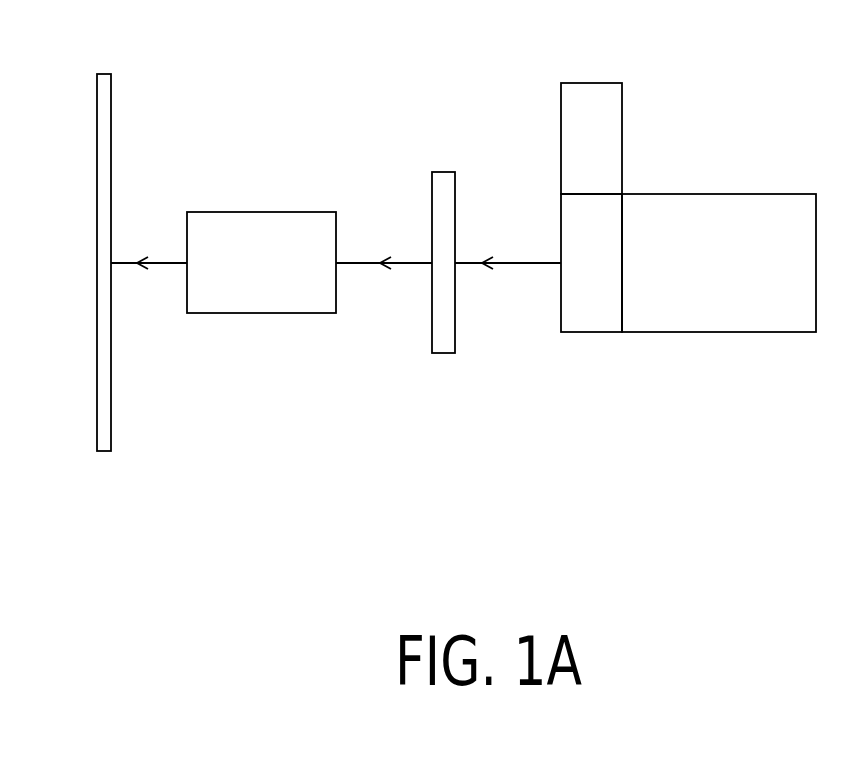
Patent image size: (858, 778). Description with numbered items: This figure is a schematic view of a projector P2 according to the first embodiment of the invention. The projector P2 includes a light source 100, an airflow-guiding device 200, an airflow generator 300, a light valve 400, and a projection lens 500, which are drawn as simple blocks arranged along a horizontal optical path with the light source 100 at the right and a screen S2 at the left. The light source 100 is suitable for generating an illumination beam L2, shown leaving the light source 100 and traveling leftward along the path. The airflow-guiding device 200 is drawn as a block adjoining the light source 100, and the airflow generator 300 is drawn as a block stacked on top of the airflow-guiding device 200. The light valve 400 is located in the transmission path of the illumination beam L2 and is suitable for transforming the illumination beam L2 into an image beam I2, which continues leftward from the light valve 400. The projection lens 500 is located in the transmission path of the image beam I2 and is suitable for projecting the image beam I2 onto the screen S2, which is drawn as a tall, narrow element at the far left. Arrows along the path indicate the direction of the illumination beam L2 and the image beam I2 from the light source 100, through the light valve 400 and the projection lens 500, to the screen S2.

The light source 100 is at (774, 193).
The airflow-guiding device 200 is at (589, 334).
The airflow generator 300 is at (590, 82).
The light valve 400 is at (440, 355).
The projection lens 500 is at (260, 315).
The screen S2 is at (101, 453).
The image beam I2 is at (375, 263).
The illumination beam L2 is at (513, 263).
The projector P2 is at (800, 481).